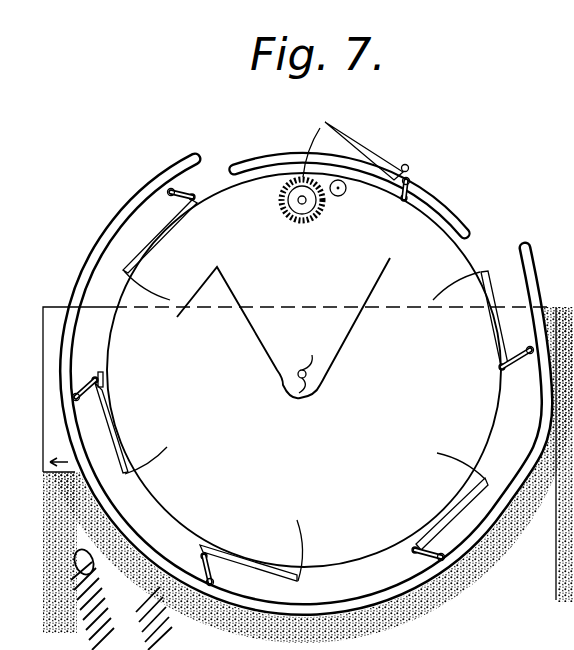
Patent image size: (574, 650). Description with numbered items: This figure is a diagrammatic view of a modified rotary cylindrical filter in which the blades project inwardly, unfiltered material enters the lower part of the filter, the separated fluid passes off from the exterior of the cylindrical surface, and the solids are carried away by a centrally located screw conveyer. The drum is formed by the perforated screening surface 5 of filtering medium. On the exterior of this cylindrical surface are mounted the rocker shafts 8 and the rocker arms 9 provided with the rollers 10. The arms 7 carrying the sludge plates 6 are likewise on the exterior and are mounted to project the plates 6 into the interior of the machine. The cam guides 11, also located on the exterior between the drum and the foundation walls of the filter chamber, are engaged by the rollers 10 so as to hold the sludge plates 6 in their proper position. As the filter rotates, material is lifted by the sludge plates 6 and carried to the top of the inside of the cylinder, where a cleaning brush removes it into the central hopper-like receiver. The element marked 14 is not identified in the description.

The perforated screening surface 5 is at (304, 370).
The sludge plate 6 is at (310, 140).
The arm 7 is at (350, 146).
The rocker shaft 8 is at (407, 202).
The rocker arm 9 is at (411, 181).
The roller 10 is at (407, 166).
The cam guide 11 is at (121, 216).
The gear 14 is at (280, 211).